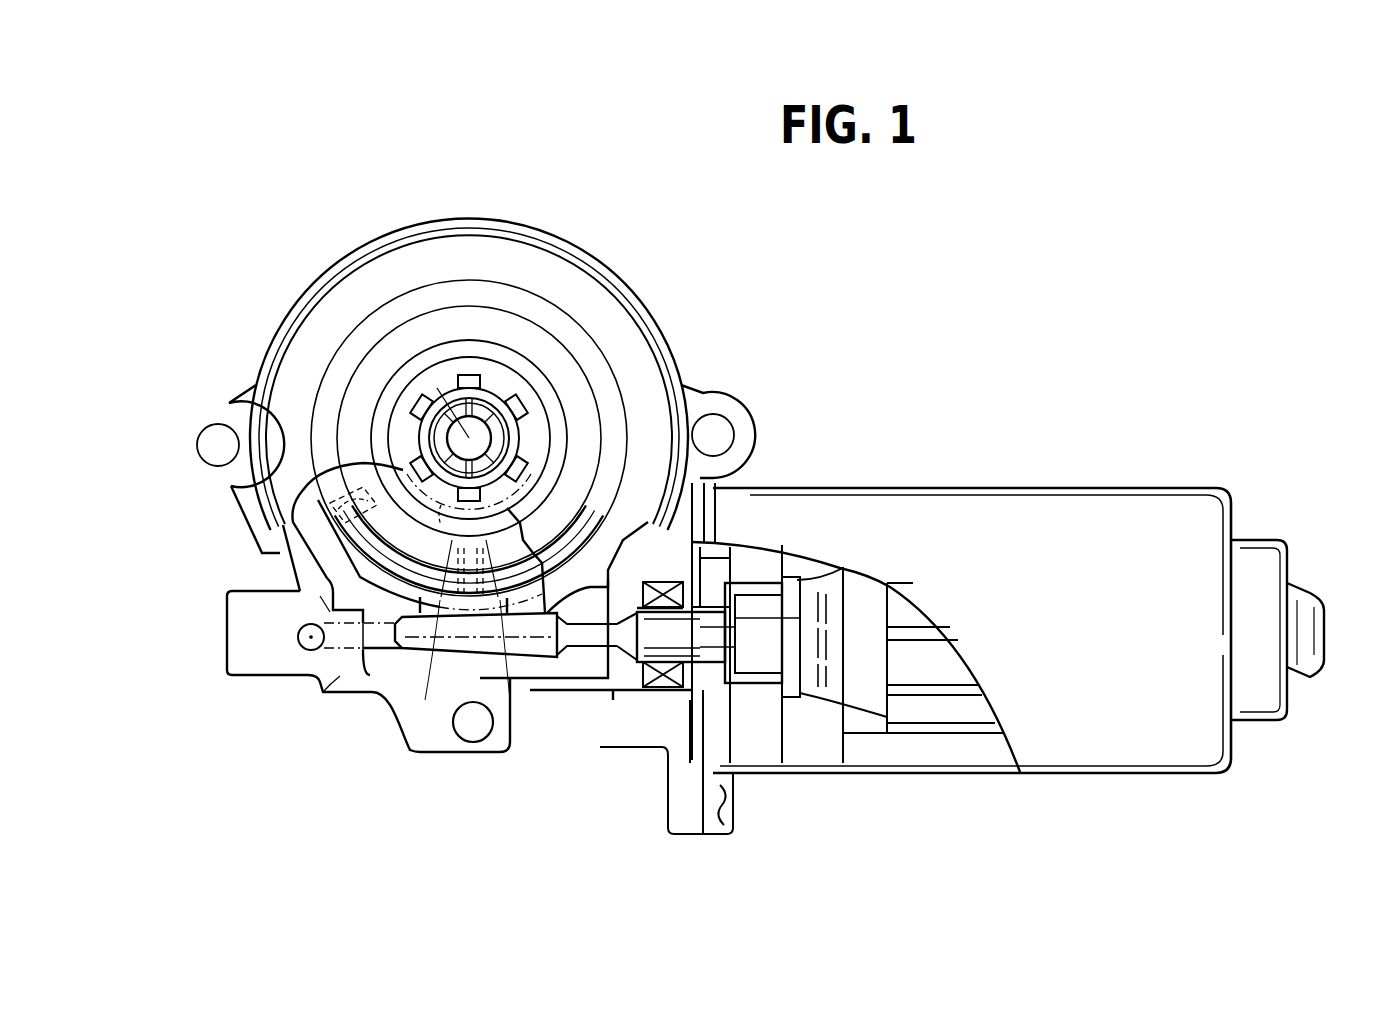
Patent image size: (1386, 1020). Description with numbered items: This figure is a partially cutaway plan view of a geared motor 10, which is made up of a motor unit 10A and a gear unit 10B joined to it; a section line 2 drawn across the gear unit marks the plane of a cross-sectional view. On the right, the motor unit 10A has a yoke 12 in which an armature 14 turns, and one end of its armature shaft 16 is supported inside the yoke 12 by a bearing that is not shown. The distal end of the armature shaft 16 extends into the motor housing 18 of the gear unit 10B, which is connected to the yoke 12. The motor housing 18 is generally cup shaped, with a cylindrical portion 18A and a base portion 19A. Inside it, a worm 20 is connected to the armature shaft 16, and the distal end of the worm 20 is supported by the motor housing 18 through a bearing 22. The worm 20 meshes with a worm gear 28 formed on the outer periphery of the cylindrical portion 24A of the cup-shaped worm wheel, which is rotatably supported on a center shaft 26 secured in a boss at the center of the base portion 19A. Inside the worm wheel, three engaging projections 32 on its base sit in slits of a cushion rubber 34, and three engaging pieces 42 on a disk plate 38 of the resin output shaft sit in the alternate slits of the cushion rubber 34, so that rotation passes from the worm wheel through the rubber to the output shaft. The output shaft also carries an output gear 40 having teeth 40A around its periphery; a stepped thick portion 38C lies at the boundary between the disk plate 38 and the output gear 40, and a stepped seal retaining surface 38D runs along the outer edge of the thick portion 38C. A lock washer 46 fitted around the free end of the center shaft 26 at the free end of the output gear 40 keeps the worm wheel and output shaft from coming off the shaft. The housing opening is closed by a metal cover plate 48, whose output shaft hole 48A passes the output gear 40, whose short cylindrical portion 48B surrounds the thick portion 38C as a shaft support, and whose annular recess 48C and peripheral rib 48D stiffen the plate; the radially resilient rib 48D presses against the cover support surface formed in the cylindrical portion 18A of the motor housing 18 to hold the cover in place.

The section line 2 is at (469, 438).
The geared motor 10 is at (972, 245).
The motor unit 10A is at (969, 367).
The gear unit 10B is at (762, 347).
The yoke 12 is at (1012, 487).
The armature 14 is at (935, 715).
The armature shaft 16 is at (643, 633).
The motor housing 18 is at (337, 692).
The cylindrical portion 18A is at (285, 547).
The base portion 19A is at (318, 597).
The worm 20 is at (535, 670).
The bearing 22 is at (312, 652).
The cylindrical portion 24A is at (432, 645).
The center shaft 26 is at (500, 400).
The worm gear 28 is at (385, 660).
The engaging projections 32 is at (300, 566).
The cushion rubber 34 is at (512, 660).
The disk plate 38 is at (327, 567).
The thick portion 38C is at (441, 506).
The seal retaining surface 38D is at (330, 655).
The output gear 40 is at (527, 437).
The teeth 40A is at (522, 398).
The engaging pieces 42 is at (452, 620).
The lock washer 46 is at (488, 390).
The cover plate 48 is at (150, 262).
The output shaft hole 48A is at (387, 403).
The short cylindrical portion 48B is at (380, 383).
The annular recess 48C is at (360, 326).
The rib 48D is at (305, 300).